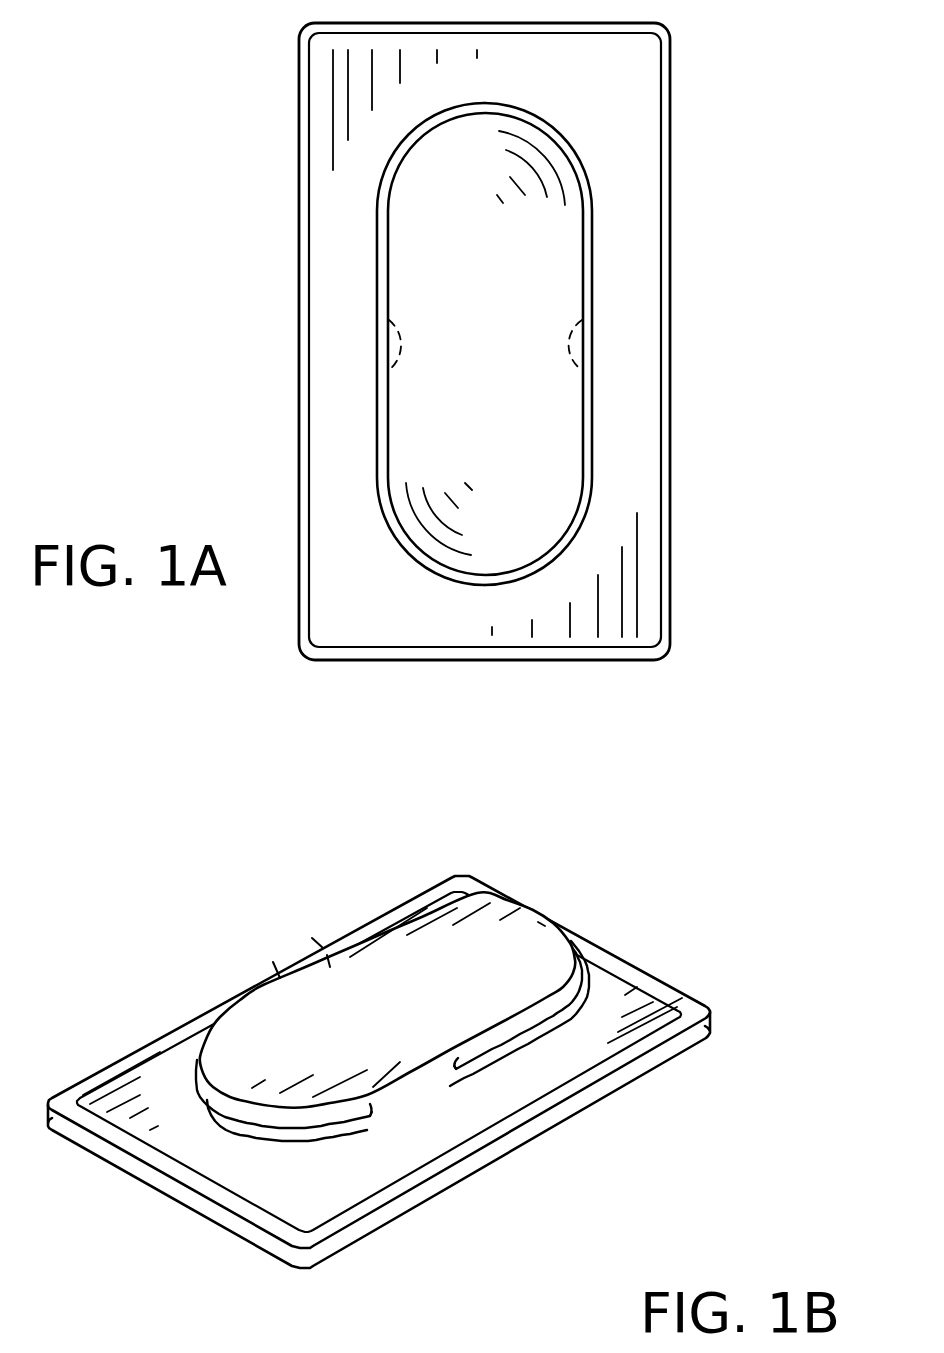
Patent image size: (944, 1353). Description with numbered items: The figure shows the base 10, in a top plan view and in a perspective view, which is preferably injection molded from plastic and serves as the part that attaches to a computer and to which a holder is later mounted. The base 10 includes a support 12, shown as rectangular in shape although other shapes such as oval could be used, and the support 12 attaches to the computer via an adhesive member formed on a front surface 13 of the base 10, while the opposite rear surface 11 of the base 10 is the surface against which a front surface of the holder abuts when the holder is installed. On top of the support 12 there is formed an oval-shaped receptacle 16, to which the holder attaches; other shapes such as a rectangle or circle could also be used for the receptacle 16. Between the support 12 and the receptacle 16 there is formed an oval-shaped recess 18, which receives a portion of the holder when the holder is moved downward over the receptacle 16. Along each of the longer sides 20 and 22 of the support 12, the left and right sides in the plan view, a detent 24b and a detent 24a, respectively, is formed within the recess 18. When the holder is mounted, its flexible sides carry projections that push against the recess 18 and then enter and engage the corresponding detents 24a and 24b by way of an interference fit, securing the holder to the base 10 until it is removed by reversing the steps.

In FIG. 1A, the base 10 is at (200, 66).
In FIG. 1B, the base 10 is at (128, 866).
In FIG. 1A, the rear surface 11 is at (646, 400).
In FIG. 1B, the rear surface 11 is at (603, 965).
In FIG. 1A, the support 12 is at (670, 547).
In FIG. 1B, the support 12 is at (689, 1047).
In FIG. 1A, the front surface 13 is at (583, 637).
In FIG. 1B, the front surface 13 is at (636, 1085).
In FIG. 1A, the receptacle 16 is at (537, 142).
In FIG. 1B, the receptacle 16 is at (537, 918).
In FIG. 1B, the recess 18 is at (300, 1126).
In FIG. 1A, the longer side 20 is at (377, 273).
In FIG. 1B, the longer side 20 is at (278, 977).
In FIG. 1A, the longer side 22 is at (592, 273).
In FIG. 1B, the longer side 22 is at (366, 1097).
In FIG. 1A, the detent 24a is at (574, 367).
In FIG. 1B, the detent 24a is at (463, 1065).
In FIG. 1A, the detent 24b is at (395, 321).
In FIG. 1B, the detent 24b is at (313, 943).